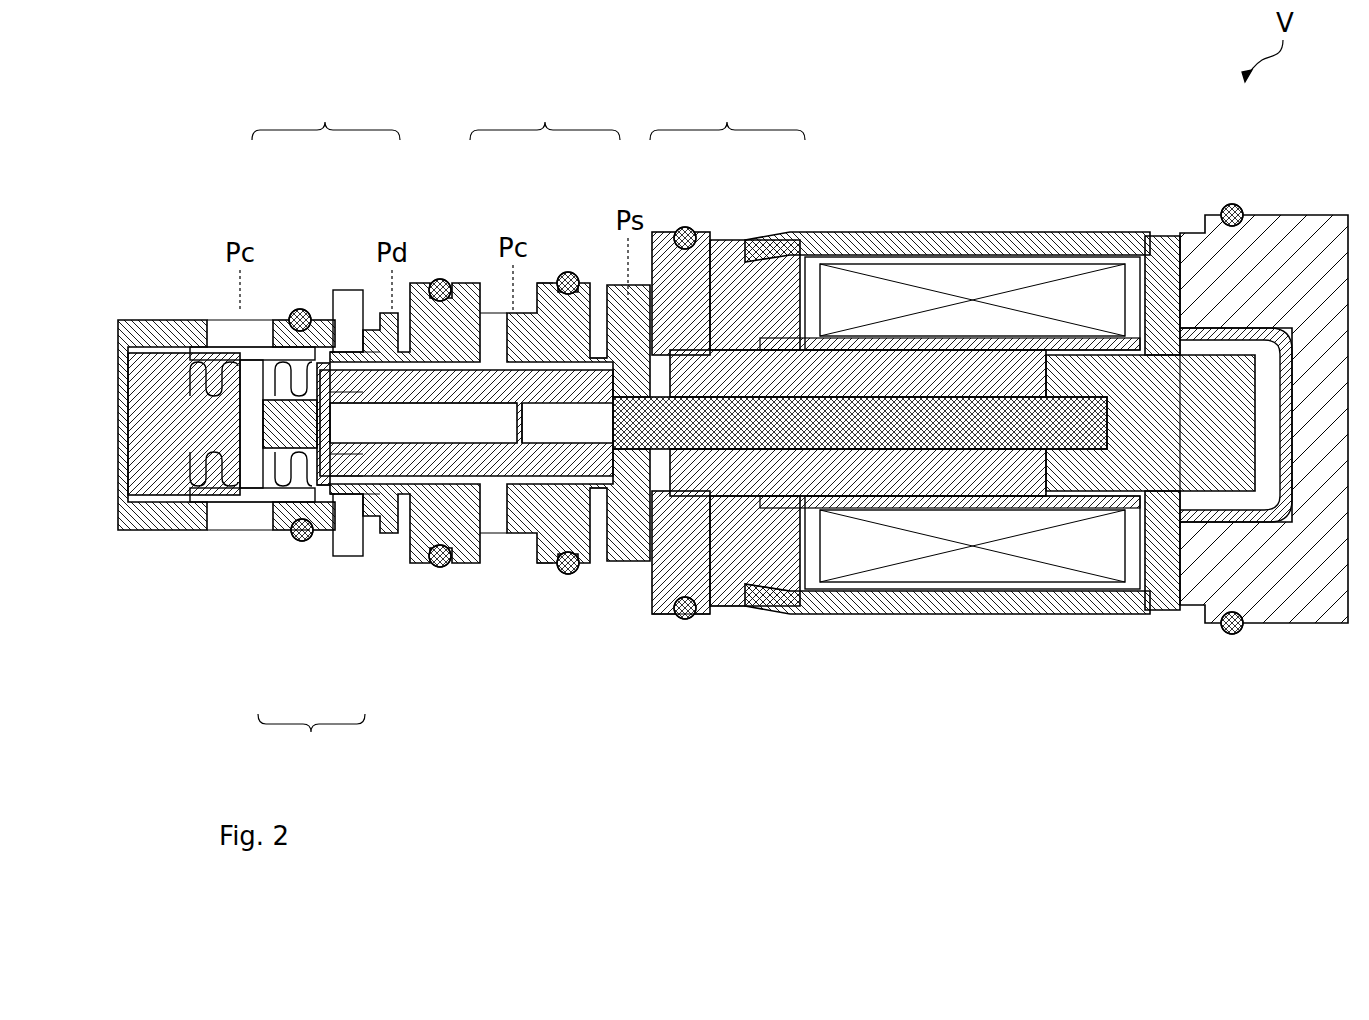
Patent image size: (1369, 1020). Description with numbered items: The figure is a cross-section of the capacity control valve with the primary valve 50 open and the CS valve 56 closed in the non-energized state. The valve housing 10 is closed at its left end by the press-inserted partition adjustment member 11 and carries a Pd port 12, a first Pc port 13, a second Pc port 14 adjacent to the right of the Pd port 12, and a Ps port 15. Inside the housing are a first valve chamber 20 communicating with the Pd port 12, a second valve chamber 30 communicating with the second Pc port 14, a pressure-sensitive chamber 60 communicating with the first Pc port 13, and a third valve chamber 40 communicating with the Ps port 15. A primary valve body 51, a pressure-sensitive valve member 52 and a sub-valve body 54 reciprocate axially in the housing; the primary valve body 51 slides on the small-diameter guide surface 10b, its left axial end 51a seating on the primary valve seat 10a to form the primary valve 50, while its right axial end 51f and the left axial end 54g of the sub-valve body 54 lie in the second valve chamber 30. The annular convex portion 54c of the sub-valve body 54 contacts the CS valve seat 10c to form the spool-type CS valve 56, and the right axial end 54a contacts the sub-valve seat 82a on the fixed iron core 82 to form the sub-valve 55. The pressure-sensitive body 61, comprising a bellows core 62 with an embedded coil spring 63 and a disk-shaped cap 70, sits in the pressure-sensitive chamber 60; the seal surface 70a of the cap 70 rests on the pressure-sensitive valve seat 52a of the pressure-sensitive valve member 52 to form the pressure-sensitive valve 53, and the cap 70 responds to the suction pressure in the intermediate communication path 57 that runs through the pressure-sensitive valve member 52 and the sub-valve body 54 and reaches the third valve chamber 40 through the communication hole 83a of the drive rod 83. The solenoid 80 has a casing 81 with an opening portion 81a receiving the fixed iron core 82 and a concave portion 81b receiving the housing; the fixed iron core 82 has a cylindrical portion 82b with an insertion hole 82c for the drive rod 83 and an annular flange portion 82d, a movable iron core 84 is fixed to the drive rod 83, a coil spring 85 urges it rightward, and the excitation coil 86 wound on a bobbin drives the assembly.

The valve housing 10 is at (157, 318).
The primary valve seat 10a is at (338, 378).
The guide surface 10b is at (443, 300).
The CS valve seat 10c is at (580, 345).
The partition adjustment member 11 is at (124, 410).
The Pd port 12 is at (400, 360).
The first Pc port 13 is at (222, 335).
The second Pc port 14 is at (495, 340).
The Ps port 15 is at (605, 345).
The first valve chamber 20 is at (378, 362).
The second valve chamber 30 is at (472, 330).
The third valve chamber 40 is at (661, 233).
The primary valve 50 is at (326, 114).
The primary valve body 51 is at (458, 556).
The left axial end 51a is at (360, 392).
The right axial end 51f is at (520, 402).
The pressure-sensitive valve member 52 is at (360, 520).
The pressure-sensitive valve seat 52a is at (300, 547).
The pressure-sensitive valve 53 is at (311, 737).
The sub-valve body 54 is at (563, 560).
The right axial end 54a is at (700, 345).
The annular convex portion 54c is at (548, 370).
The left axial end 54g is at (468, 406).
The sub-valve 55 is at (727, 113).
The CS valve 56 is at (545, 113).
The intermediate communication path 57 is at (535, 556).
The pressure-sensitive chamber 60 is at (252, 345).
The pressure-sensitive body 61 is at (200, 502).
The bellows core 62 is at (230, 492).
The coil spring 63 is at (265, 477).
The cap 70 is at (300, 482).
The seal surface 70a is at (340, 520).
The solenoid 80 is at (1140, 208).
The casing 81 is at (657, 620).
The opening portion 81a is at (752, 600).
The concave portion 81b is at (715, 606).
The fixed iron core 82 is at (1005, 252).
The sub-valve seat 82a is at (690, 345).
The cylindrical portion 82b is at (985, 335).
The insertion hole 82c is at (918, 380).
The annular flange portion 82d is at (830, 238).
The drive rod 83 is at (1095, 300).
The communication hole 83a is at (643, 556).
The movable iron core 84 is at (1160, 560).
The coil spring 85 is at (1068, 583).
The excitation coil 86 is at (960, 590).